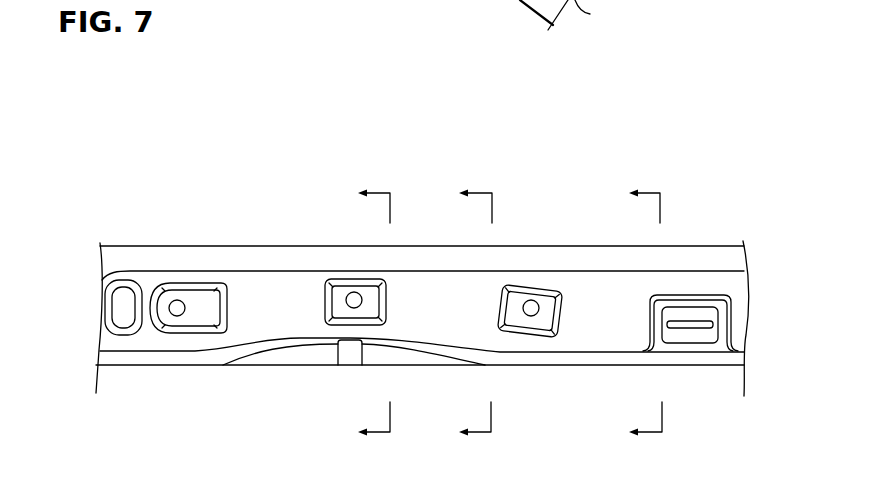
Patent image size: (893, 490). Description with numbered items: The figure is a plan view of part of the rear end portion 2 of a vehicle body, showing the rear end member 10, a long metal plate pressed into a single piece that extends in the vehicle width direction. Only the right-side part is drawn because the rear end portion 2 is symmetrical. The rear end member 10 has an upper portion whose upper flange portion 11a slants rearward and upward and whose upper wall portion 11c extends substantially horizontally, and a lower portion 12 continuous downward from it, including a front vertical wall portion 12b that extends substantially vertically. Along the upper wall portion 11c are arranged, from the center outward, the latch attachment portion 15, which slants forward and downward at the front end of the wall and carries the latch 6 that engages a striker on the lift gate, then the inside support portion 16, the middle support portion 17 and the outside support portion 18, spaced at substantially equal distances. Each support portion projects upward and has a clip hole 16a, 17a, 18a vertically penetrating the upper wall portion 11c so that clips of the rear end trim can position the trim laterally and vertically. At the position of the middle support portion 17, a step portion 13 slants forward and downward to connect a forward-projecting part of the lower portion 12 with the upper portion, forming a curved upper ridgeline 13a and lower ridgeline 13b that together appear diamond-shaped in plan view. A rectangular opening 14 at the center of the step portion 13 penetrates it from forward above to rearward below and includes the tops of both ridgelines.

The rear end portion 2 is at (160, 148).
The latch 6 is at (690, 323).
The rear end member 10 is at (427, 240).
The upper flange portion 11a is at (674, 258).
The upper wall portion 11c is at (605, 307).
The lower portion 12 is at (594, 17).
The front vertical wall portion 12b is at (525, 5).
The step portion 13 is at (420, 370).
The upper ridgeline 13a is at (410, 339).
The lower ridgeline 13b is at (324, 366).
The opening 14 is at (360, 354).
The latch attachment portion 15 is at (690, 308).
The inside support portion 16 is at (537, 267).
The clip hole 16a is at (524, 302).
The middle support portion 17 is at (349, 261).
The clip hole 17a is at (355, 297).
The outside support portion 18 is at (186, 265).
The clip hole 18a is at (175, 300).